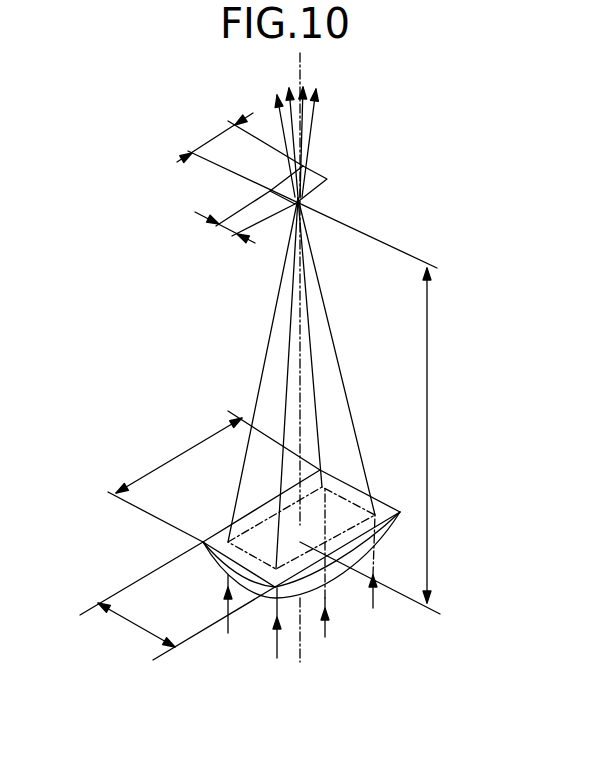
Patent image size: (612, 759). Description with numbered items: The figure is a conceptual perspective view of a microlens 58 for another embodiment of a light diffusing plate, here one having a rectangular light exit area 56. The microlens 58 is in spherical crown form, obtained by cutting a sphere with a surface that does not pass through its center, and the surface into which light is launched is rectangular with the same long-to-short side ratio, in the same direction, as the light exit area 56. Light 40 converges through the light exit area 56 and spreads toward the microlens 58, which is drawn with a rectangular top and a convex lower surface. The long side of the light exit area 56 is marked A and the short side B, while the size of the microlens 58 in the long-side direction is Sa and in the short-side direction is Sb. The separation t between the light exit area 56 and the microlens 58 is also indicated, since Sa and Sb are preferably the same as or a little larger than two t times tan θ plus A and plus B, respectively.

The light beam / luminous flux 40 is at (235, 353).
The light exit area 56 is at (315, 214).
The microlens 58 is at (343, 597).
The length of the long side of the light exit area A is at (210, 138).
The length of the short side of the light exit area B is at (221, 225).
The distance t is at (432, 440).
The size of the microlens in the long-side direction Sa is at (177, 457).
The size of the microlens in the short-side direction Sb is at (130, 626).